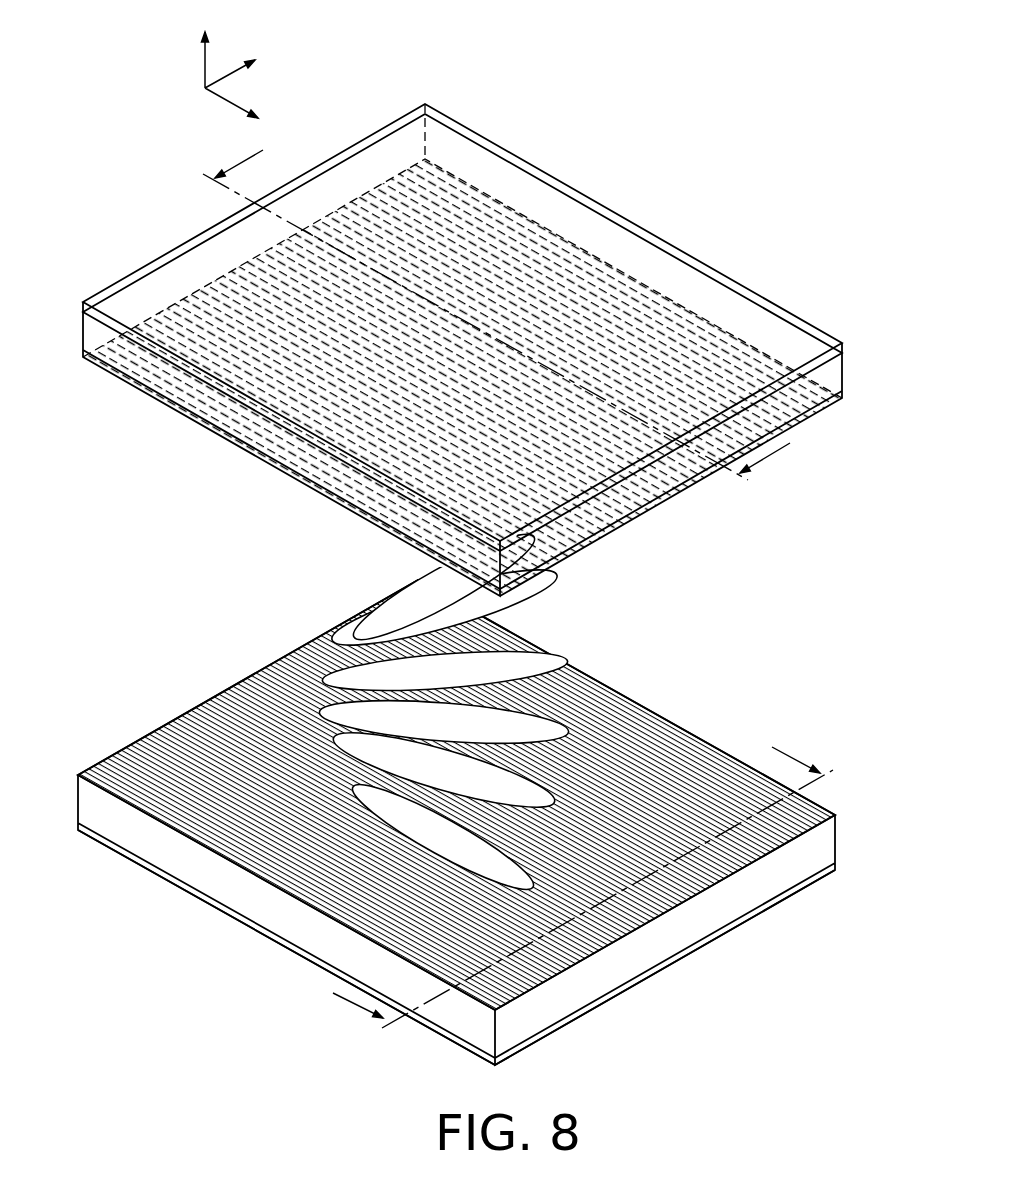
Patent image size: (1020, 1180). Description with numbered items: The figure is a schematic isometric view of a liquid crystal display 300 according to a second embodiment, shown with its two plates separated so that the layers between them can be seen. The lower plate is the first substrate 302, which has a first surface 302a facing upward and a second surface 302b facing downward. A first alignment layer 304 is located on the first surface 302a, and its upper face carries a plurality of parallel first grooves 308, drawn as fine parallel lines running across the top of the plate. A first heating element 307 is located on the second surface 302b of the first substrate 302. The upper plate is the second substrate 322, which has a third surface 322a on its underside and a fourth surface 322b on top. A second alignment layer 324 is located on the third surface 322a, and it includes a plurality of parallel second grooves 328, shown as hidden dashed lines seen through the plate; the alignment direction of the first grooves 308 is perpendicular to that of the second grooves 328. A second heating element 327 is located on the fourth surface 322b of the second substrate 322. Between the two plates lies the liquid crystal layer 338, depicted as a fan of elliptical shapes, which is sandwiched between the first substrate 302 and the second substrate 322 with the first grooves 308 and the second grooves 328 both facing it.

The liquid crystal display 300 is at (511, 43).
The first substrate 302 is at (633, 958).
The first surface 302a is at (835, 815).
The second surface 302b is at (732, 928).
The first alignment layer 304 is at (772, 857).
The first heating element 307 is at (152, 870).
The first grooves 308 is at (683, 760).
The second substrate 322 is at (95, 333).
The third surface 322a is at (330, 497).
The fourth surface 322b is at (116, 318).
The second alignment layer 324 is at (172, 407).
The second heating element 327 is at (845, 356).
The second grooves 328 is at (255, 452).
The liquid crystal layer 338 is at (533, 585).